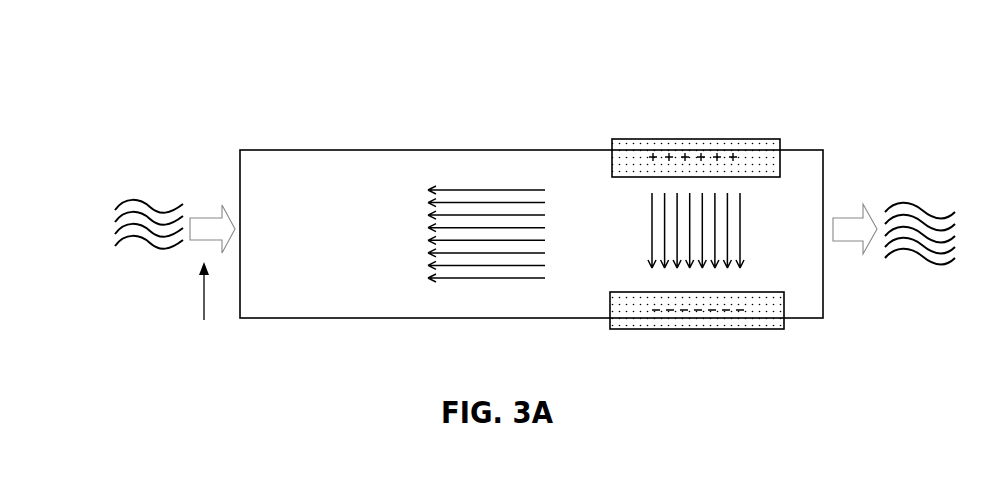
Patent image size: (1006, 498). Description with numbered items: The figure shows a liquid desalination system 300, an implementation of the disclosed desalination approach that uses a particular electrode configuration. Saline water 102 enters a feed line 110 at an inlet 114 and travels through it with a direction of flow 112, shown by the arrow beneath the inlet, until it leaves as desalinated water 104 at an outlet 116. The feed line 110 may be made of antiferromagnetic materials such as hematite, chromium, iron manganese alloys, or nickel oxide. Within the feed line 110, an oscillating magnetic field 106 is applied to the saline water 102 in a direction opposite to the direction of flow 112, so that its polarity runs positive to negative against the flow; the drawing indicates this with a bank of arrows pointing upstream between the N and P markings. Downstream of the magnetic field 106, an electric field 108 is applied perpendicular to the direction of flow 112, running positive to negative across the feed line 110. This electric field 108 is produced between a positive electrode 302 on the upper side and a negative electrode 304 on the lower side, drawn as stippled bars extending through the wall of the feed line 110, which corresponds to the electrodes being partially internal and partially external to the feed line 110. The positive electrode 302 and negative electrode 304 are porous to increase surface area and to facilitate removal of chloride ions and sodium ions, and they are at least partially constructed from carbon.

The liquid desalination system 300 is at (494, 21).
The saline water 102 is at (152, 188).
The desalinated water 104 is at (911, 178).
The oscillating magnetic field 106 is at (488, 168).
The electric field 108 is at (638, 202).
The feed line 110 is at (285, 150).
The direction of flow 112 is at (204, 341).
The inlet 114 is at (233, 157).
The outlet 116 is at (832, 301).
The positive electrode 302 is at (693, 145).
The negative electrode 304 is at (673, 323).